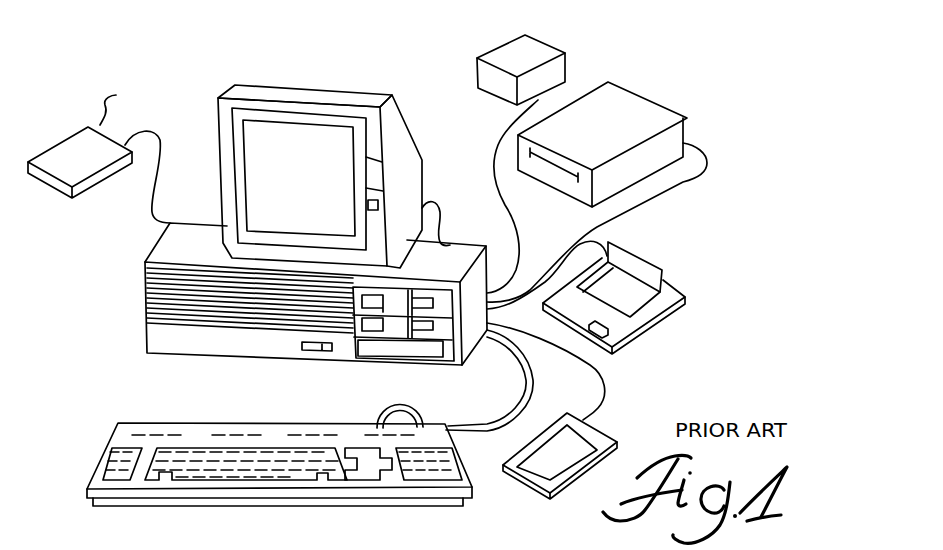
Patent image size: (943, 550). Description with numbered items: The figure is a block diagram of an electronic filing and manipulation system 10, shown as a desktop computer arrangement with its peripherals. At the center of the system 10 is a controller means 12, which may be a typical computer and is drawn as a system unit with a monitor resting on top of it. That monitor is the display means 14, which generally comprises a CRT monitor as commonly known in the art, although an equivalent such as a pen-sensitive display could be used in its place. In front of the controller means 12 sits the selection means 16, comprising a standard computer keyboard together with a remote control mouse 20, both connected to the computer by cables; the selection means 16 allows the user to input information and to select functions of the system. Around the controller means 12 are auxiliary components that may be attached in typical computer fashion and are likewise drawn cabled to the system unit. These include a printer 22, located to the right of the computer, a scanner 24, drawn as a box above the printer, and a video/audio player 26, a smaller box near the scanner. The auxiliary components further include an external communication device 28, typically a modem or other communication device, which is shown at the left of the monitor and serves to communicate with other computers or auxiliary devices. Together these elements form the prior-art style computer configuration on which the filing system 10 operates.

The electronic filing and manipulation system 10 is at (249, 85).
The controller means 12 is at (162, 335).
The display means 14 is at (357, 97).
The selection means 16 is at (122, 428).
The remote control mouse 20 is at (600, 433).
The printer 22 is at (663, 311).
The scanner 24 is at (635, 115).
The video/audio player 26 is at (553, 72).
The external communication device 28 is at (56, 190).